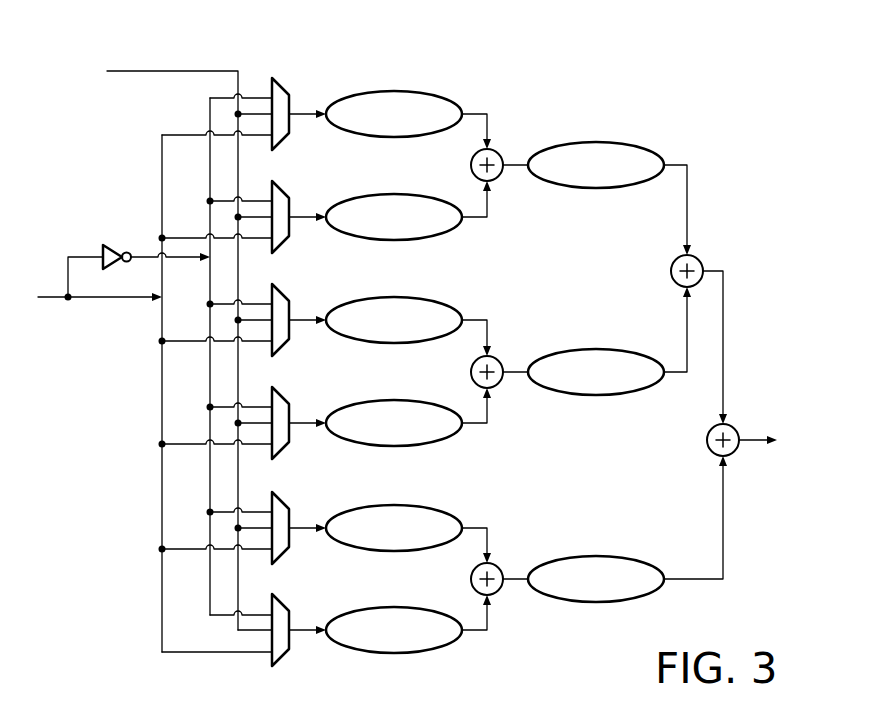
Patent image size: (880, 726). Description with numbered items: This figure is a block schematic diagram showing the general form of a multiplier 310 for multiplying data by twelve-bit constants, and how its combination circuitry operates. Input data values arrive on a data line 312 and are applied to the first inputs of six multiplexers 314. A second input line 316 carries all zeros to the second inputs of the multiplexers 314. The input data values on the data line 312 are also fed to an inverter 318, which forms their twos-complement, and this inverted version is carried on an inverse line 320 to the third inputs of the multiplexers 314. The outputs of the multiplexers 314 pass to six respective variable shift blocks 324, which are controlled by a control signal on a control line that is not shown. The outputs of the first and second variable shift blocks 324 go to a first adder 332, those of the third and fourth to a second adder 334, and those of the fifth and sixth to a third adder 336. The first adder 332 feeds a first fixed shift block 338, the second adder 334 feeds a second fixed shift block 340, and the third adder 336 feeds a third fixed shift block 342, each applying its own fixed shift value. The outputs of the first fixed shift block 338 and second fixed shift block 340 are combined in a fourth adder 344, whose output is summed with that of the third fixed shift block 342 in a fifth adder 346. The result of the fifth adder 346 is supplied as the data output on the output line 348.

The multiplier 310 is at (494, 84).
The data line 312 is at (49, 294).
The multiplexers 314 is at (281, 87).
The second input line 316 is at (172, 71).
The inverter 318 is at (103, 246).
The inverse line 320 is at (145, 254).
The variable shift blocks 324 is at (394, 607).
The first adder 332 is at (499, 153).
The second adder 334 is at (499, 361).
The third adder 336 is at (499, 568).
The first fixed shift block 338 is at (595, 142).
The second fixed shift block 340 is at (595, 349).
The third fixed shift block 342 is at (595, 556).
The fourth adder 344 is at (699, 260).
The fifth adder 346 is at (711, 430).
The output line 348 is at (752, 436).